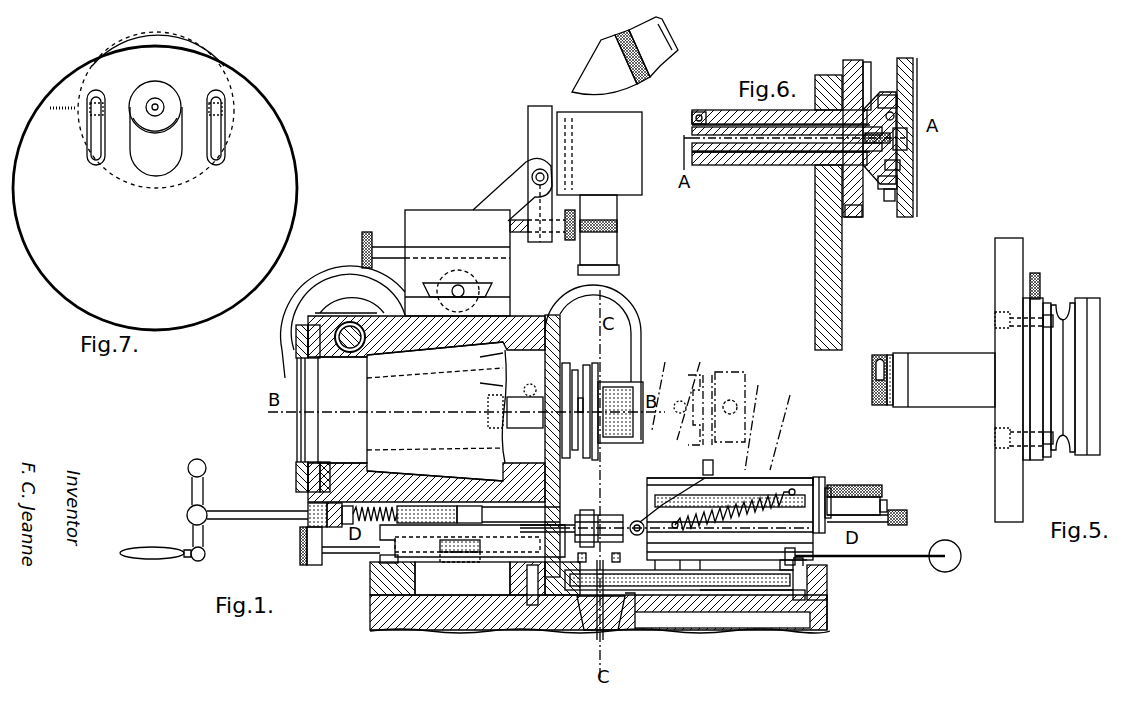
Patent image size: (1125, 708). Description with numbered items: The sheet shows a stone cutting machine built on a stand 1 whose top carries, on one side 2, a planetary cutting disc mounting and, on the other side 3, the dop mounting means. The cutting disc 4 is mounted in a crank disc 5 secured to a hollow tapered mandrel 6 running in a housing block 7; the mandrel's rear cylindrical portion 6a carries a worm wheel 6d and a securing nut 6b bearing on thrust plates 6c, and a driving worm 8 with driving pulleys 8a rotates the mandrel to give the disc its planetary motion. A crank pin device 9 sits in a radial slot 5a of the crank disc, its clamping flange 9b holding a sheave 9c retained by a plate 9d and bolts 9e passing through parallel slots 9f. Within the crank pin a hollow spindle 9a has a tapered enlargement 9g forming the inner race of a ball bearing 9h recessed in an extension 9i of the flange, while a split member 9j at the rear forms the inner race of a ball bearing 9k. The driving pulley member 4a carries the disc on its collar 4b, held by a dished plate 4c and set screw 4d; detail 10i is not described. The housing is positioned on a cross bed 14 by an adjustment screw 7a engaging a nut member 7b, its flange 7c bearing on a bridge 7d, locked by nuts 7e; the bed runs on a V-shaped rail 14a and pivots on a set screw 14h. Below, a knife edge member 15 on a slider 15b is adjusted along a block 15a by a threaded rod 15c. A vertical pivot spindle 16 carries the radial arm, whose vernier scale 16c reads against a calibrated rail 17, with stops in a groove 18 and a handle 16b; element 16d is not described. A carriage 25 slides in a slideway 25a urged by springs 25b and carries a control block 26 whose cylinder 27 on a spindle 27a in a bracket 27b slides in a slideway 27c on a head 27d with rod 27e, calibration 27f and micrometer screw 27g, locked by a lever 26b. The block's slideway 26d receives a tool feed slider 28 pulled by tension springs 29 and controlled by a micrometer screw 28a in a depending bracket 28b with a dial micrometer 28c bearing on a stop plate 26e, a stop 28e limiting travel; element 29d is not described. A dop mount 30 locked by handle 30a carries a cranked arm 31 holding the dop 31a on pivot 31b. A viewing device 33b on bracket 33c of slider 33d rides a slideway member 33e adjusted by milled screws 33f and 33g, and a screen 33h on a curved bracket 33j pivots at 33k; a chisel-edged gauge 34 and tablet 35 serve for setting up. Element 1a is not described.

In FIG. 1, the stand 1 is at (428, 595).
In FIG. 1, the base part 1a is at (632, 590).
In FIG. 1, the side of the stand top 2 is at (370, 626).
In FIG. 1, the other side of the stand top 3 is at (821, 587).
In FIG. 6, the cutting disc 4 is at (905, 212).
In FIG. 5, the cutting disc 4 is at (1090, 455).
In FIG. 1, the cutting disc 4 is at (587, 365).
In FIG. 6, the driving pulley member 4a is at (891, 203).
In FIG. 5, the driving pulley member 4a is at (1068, 452).
In FIG. 1, the driving pulley member 4a is at (557, 438).
In FIG. 6, the collar 4b is at (900, 100).
In FIG. 6, the dished plate 4c is at (900, 184).
In FIG. 6, the set screw 4d is at (908, 145).
In FIG. 7, the crank disc 5 is at (290, 147).
In FIG. 6, the crank disc 5 is at (815, 238).
In FIG. 5, the crank disc 5 is at (1000, 297).
In FIG. 1, the crank disc 5 is at (548, 315).
In FIG. 7, the radial slot 5a is at (160, 165).
In FIG. 6, the radial slot 5a is at (815, 190).
In FIG. 1, the hollow tapered mandrel 6 is at (526, 316).
In FIG. 1, the cylindrical portion 6a is at (355, 401).
In FIG. 1, the securing nut 6b is at (296, 473).
In FIG. 1, the thrust plates 6c is at (300, 481).
In FIG. 1, the worm wheel 6d is at (347, 462).
In FIG. 1, the housing block 7 is at (403, 340).
In FIG. 1, the hand operable adjustment screw 7a is at (234, 512).
In FIG. 1, the nut member 7b is at (407, 503).
In FIG. 1, the flange 7c is at (368, 500).
In FIG. 1, the bridge 7d is at (337, 502).
In FIG. 1, the locking nuts 7e is at (308, 516).
In FIG. 1, the driving worm 8 is at (292, 343).
In FIG. 1, the driving pulleys 8a is at (288, 328).
In FIG. 6, the crank pin device 9 is at (783, 165).
In FIG. 5, the crank pin device 9 is at (921, 367).
In FIG. 1, the crank pin device 9 is at (486, 422).
In FIG. 7, the hollow spindle 9a is at (165, 100).
In FIG. 6, the hollow spindle 9a is at (752, 152).
In FIG. 7, the clamping flange 9b is at (188, 45).
In FIG. 6, the clamping flange 9b is at (866, 75).
In FIG. 5, the clamping flange 9b is at (1028, 461).
In FIG. 1, the clamping flange 9b is at (566, 364).
In FIG. 6, the sheave 9c is at (850, 72).
In FIG. 5, the sheave 9c is at (1036, 312).
In FIG. 1, the sheave 9c is at (567, 362).
In FIG. 6, the plate 9d is at (860, 86).
In FIG. 5, the plate 9d is at (1050, 312).
In FIG. 1, the plate 9d is at (582, 460).
In FIG. 7, the bolts 9e is at (88, 112).
In FIG. 5, the bolts 9e is at (995, 324).
In FIG. 7, the parallel slots 9f is at (93, 158).
In FIG. 6, the tapered enlargement 9g is at (906, 116).
In FIG. 6, the ball bearing 9h is at (902, 168).
In FIG. 6, the extension of the clamping flange 9i is at (860, 217).
In FIG. 7, the split member 9j is at (165, 102).
In FIG. 6, the split member 9j is at (700, 152).
In FIG. 5, the split member 9j is at (888, 362).
In FIG. 1, the split member 9j is at (488, 401).
In FIG. 6, the ball bearing 9k is at (728, 152).
In FIG. 1, the disc 10i is at (583, 400).
In FIG. 1, the cross bed 14 is at (395, 580).
In FIG. 1, the V-shaped rail 14a is at (540, 597).
In FIG. 1, the set screw 14h is at (535, 606).
In FIG. 1, the knife edge member 15 is at (530, 533).
In FIG. 1, the block 15a is at (437, 590).
In FIG. 1, the slider 15b is at (397, 578).
In FIG. 1, the screw threaded rod 15c is at (356, 553).
In FIG. 1, the vertical pivot spindle 16 is at (578, 605).
In FIG. 1, the handle 16b is at (878, 564).
In FIG. 1, the vernier scale 16c is at (795, 557).
In FIG. 1, the support part 16d is at (703, 592).
In FIG. 1, the semicircular flange or rail 17 is at (820, 568).
In FIG. 1, the groove 18 is at (828, 620).
In FIG. 1, the carriage 25 is at (748, 592).
In FIG. 1, the geometric ball bearing slideway 25a is at (737, 600).
In FIG. 1, the springs 25b is at (806, 596).
In FIG. 1, the control block 26 is at (745, 561).
In FIG. 1, the lever 26b is at (752, 495).
In FIG. 1, the geometric ball bearing slideway 26d is at (757, 420).
In FIG. 1, the stop plate 26e is at (808, 560).
In FIG. 1, the roller or cylinder 27 is at (582, 513).
In FIG. 1, the spindle 27a is at (600, 517).
In FIG. 1, the bracket 27b is at (631, 521).
In FIG. 1, the slideway 27c is at (641, 521).
In FIG. 1, the head 27d is at (614, 563).
In FIG. 1, the horizontal supporting rod 27e is at (787, 600).
In FIG. 1, the calibration 27f is at (690, 600).
In FIG. 1, the micrometer screw means 27g is at (657, 590).
In FIG. 1, the tool feed slider 28 is at (824, 489).
In FIG. 1, the micrometer screw device 28a is at (908, 518).
In FIG. 1, the depending bracket 28b is at (860, 487).
In FIG. 1, the dial face micrometer device 28c is at (870, 500).
In FIG. 1, the stop 28e is at (723, 458).
In FIG. 1, the tension spring 29 is at (737, 483).
In FIG. 1, the lever part 29d is at (748, 385).
In FIG. 1, the dop holding mount 30 is at (773, 470).
In FIG. 1, the handle 30a is at (826, 478).
In FIG. 1, the cranked arm 31 is at (679, 402).
In FIG. 1, the dop 31a is at (652, 405).
In FIG. 1, the pivot 31b is at (688, 402).
In FIG. 1, the viewing device 33b is at (627, 166).
In FIG. 1, the bracket 33c is at (511, 190).
In FIG. 1, the slider 33d is at (497, 272).
In FIG. 1, the slideway member 33e is at (472, 355).
In FIG. 1, the milled screw 33f is at (568, 240).
In FIG. 1, the milled screw 33g is at (367, 232).
In FIG. 1, the screen 33h is at (615, 385).
In FIG. 1, the curved bracket 33j is at (633, 320).
In FIG. 1, the pivot 33k is at (473, 378).
In FIG. 1, the chisel-edged gauge 34 is at (600, 494).
In FIG. 1, the removable tablet 35 is at (572, 631).